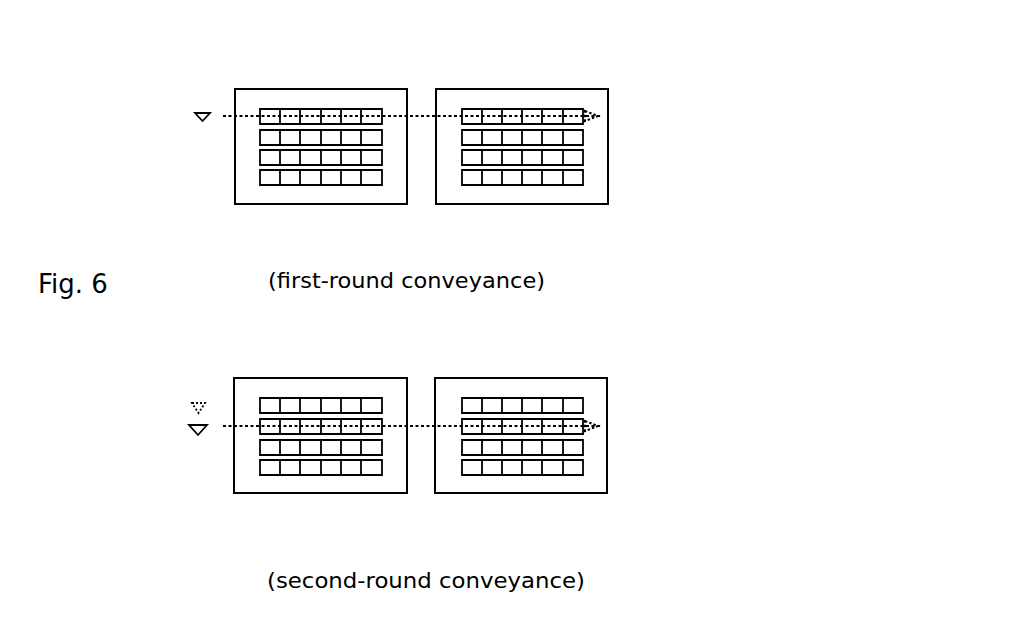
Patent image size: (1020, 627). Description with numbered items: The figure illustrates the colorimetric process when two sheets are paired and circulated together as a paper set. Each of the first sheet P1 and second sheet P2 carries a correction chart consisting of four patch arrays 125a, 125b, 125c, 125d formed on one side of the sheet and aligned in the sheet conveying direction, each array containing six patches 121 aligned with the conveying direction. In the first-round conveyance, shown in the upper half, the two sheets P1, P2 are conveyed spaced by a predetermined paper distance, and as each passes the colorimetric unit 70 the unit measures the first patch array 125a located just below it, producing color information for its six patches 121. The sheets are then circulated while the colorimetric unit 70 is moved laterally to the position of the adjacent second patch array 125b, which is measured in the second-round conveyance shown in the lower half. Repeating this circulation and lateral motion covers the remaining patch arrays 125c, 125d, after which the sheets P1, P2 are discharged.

The colorimetric unit 70 is at (195, 115).
The patch 121 is at (427, 294).
The first patch array 125a is at (312, 110).
The second patch array 125b is at (260, 135).
The third patch array 125c is at (260, 158).
The fourth patch array 125d is at (353, 184).
The first sheet P1 is at (263, 89).
The second sheet P2 is at (465, 89).